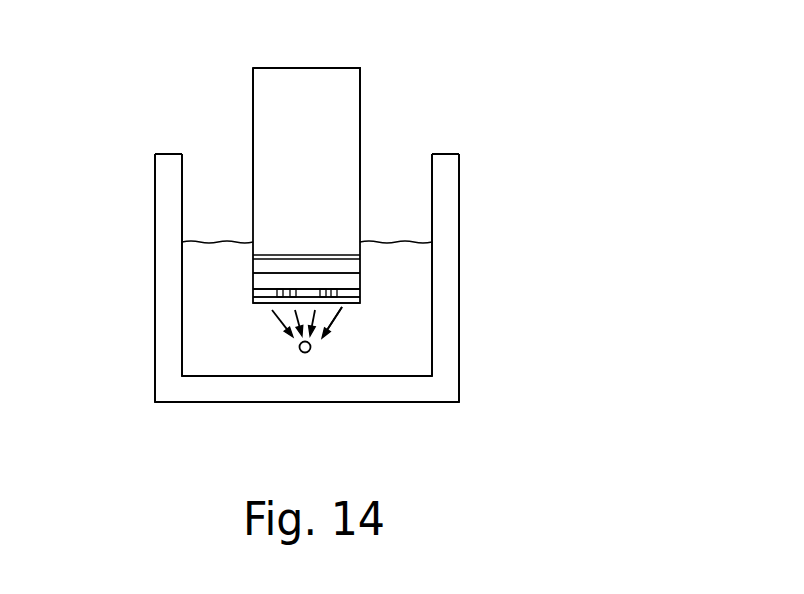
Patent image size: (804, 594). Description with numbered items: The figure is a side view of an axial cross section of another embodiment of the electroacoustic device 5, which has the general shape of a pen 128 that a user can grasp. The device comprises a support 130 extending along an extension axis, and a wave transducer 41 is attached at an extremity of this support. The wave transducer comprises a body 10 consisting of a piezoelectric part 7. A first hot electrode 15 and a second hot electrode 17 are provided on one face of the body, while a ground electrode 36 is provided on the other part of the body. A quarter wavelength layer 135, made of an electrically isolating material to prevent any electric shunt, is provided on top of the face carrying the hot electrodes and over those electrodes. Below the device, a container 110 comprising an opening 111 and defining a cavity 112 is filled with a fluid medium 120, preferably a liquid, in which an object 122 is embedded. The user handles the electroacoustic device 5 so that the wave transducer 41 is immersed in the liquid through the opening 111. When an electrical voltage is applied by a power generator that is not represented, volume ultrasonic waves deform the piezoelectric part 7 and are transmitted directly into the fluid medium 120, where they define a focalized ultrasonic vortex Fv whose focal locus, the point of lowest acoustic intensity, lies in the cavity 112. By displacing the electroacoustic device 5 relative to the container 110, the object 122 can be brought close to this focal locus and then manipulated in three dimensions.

The electroacoustic device 5 is at (408, 128).
The piezoelectric part 7 is at (253, 284).
The body 10 is at (360, 286).
The first hot electrode 15 is at (360, 300).
The second hot electrode 17 is at (342, 306).
The ground electrode 36 is at (360, 267).
The wave transducer 41 is at (253, 276).
The container 110 is at (168, 352).
The opening 111 is at (209, 179).
The cavity 112 is at (413, 353).
The fluid medium 120 is at (197, 360).
The object 122 is at (303, 353).
The pen 128 is at (327, 85).
The support 130 is at (268, 82).
The quarter wavelength layer 135 is at (277, 292).
The focalized ultrasonic vortex Fv is at (343, 310).